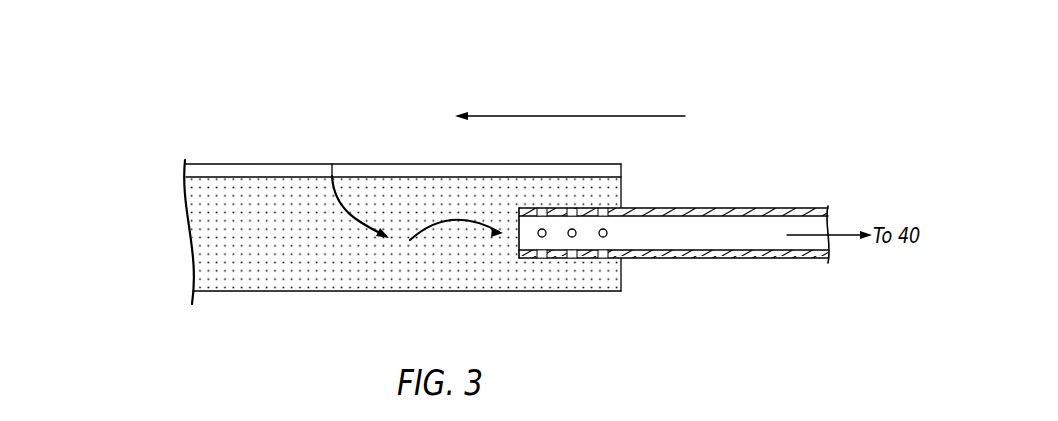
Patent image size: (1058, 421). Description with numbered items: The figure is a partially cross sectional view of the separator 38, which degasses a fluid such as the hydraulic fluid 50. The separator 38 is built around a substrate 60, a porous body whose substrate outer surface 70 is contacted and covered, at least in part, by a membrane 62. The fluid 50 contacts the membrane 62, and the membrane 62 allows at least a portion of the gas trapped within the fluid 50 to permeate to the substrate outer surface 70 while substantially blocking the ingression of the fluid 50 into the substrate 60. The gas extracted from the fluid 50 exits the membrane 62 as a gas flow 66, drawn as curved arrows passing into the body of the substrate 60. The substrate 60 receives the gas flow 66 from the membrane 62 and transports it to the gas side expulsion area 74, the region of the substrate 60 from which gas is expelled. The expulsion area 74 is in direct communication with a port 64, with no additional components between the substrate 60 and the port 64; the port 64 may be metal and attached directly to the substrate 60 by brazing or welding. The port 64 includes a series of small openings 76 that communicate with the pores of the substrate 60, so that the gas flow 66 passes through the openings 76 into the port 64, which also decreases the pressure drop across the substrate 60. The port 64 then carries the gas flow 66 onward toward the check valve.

The separator 38 is at (140, 332).
The hydraulic fluid 50 is at (623, 116).
The substrate 60 is at (332, 273).
The membrane 62 is at (260, 171).
The port 64 is at (785, 210).
The gas flow 66 is at (450, 220).
The substrate outer surface 70 is at (606, 187).
The gas side expulsion area 74 is at (617, 258).
The small openings 76 is at (541, 208).